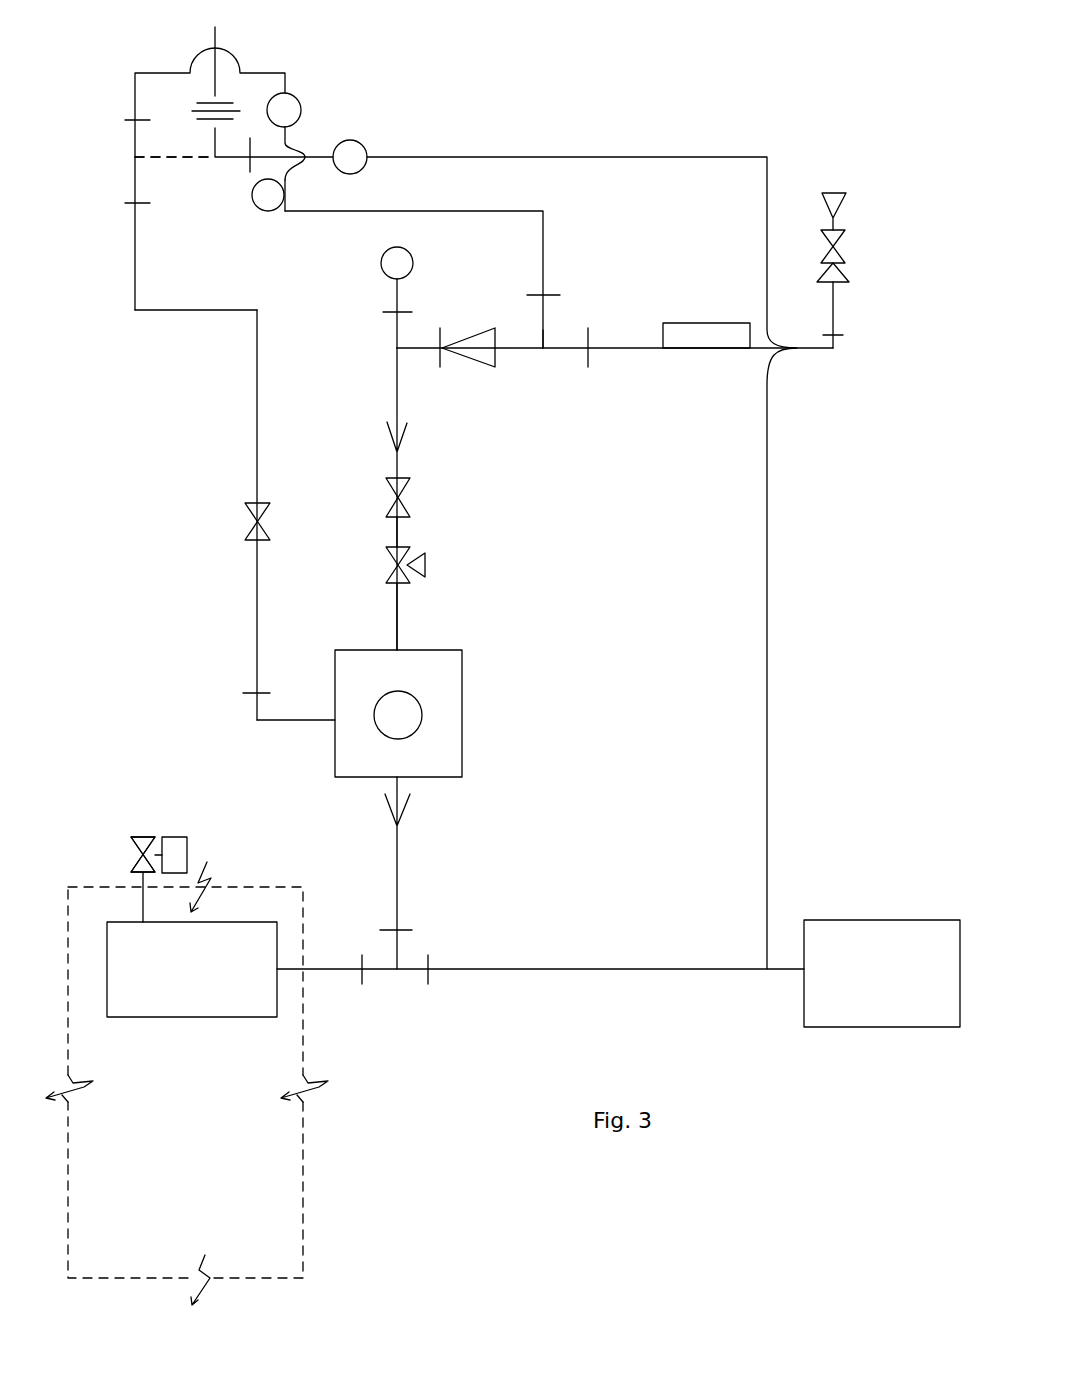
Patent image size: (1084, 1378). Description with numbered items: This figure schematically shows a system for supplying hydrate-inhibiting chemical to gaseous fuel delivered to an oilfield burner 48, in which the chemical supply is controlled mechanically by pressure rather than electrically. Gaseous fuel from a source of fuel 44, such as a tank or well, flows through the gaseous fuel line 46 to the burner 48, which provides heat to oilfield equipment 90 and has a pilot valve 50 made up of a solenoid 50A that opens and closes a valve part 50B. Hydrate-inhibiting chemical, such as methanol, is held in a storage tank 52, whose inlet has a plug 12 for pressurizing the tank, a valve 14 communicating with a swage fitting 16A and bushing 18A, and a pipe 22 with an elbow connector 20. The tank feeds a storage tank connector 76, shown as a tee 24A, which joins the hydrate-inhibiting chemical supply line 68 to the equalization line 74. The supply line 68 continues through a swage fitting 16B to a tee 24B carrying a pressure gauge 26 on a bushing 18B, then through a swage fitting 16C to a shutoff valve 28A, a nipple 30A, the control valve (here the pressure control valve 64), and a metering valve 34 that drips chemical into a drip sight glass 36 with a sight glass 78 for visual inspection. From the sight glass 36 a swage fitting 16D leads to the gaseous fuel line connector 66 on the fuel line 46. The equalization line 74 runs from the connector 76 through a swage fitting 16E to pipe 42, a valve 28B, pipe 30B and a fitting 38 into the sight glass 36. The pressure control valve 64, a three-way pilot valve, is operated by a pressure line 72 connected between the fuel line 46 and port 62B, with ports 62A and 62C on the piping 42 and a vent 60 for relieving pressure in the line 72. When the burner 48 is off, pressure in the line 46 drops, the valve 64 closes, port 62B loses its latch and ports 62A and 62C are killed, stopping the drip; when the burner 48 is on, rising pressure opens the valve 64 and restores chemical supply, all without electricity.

The plug 12 is at (823, 197).
The valve 14 is at (840, 247).
The swage fitting 16A is at (845, 263).
The swage fitting 16B is at (445, 343).
The swage fitting 16C is at (405, 432).
The swage fitting 16D is at (398, 815).
The swage fitting 16E is at (557, 296).
The bushing 18A is at (848, 290).
The bushing 18B is at (387, 309).
The elbow connector 20 is at (825, 350).
The pipe 22 is at (810, 350).
The tee 24A is at (543, 348).
The tee 24B is at (397, 348).
The pressure gauge 26 is at (387, 250).
The shutoff valve 28A is at (403, 490).
The valve 28B is at (250, 523).
The nipple 30A is at (400, 530).
The pipe 30B is at (400, 623).
The metering valve 34 is at (403, 578).
The drip sight glass 36 is at (463, 753).
The fitting 38 is at (257, 718).
The pipe 42 is at (408, 211).
The source of fuel 44 is at (863, 919).
The gaseous fuel line 46 is at (520, 969).
The oilfield burner 48 is at (200, 1017).
The pilot valve 50 is at (132, 848).
The solenoid 50A is at (178, 837).
The valve part 50B is at (142, 838).
The storage tank 52 is at (688, 322).
The vent 60 is at (212, 45).
The port 62A is at (300, 107).
The port 62B is at (360, 142).
The port 62C is at (258, 212).
The pressure control valve 64 is at (135, 180).
The gaseous fuel line connector 66 is at (397, 953).
The hydrate-inhibiting chemical supply line 68 is at (397, 884).
The pressure line 72 is at (767, 515).
The equalization line 74 is at (135, 268).
The storage tank connector 76 is at (590, 358).
The sight glass 78 is at (418, 692).
The oilfield equipment 90 is at (305, 1165).